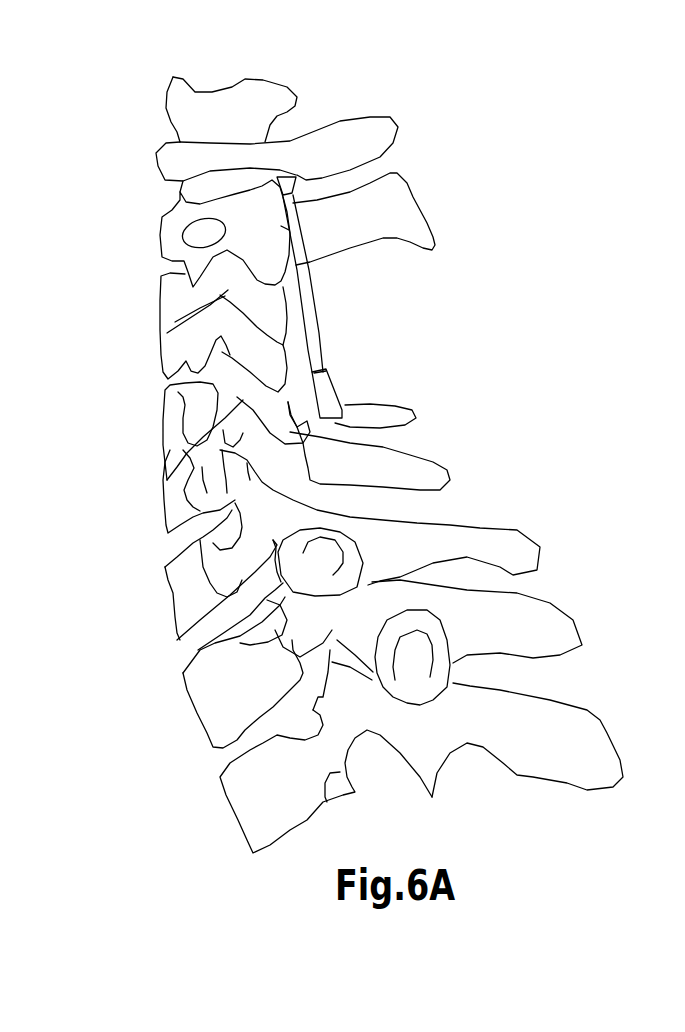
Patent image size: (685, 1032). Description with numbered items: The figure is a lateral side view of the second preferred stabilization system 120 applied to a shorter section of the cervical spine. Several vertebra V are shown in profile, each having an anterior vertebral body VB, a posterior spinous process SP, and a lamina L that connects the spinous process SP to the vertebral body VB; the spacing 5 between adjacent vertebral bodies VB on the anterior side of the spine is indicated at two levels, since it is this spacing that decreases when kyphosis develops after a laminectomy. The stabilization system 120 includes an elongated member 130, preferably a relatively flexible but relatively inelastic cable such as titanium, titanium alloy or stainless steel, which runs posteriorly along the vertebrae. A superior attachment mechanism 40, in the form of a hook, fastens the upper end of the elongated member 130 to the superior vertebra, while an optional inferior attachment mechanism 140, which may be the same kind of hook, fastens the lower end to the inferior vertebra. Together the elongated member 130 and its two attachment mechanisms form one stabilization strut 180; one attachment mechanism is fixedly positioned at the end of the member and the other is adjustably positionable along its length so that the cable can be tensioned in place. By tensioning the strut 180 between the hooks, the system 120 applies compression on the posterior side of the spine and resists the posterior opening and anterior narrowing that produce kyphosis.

The superior attachment mechanism 40 is at (372, 184).
The spinous process SP is at (467, 485).
The stabilization strut 180 is at (392, 283).
The stabilization system 120 is at (393, 283).
The elongated member 130 is at (380, 383).
The inferior attachment mechanism 140 is at (422, 408).
The lamina L is at (394, 590).
The vertebral body VB is at (253, 510).
The vertebra V is at (189, 464).
The spacing 5 is at (145, 306).